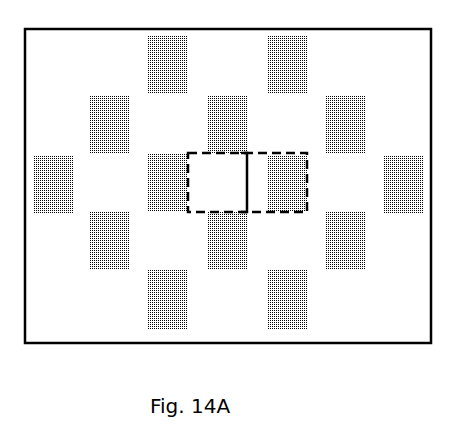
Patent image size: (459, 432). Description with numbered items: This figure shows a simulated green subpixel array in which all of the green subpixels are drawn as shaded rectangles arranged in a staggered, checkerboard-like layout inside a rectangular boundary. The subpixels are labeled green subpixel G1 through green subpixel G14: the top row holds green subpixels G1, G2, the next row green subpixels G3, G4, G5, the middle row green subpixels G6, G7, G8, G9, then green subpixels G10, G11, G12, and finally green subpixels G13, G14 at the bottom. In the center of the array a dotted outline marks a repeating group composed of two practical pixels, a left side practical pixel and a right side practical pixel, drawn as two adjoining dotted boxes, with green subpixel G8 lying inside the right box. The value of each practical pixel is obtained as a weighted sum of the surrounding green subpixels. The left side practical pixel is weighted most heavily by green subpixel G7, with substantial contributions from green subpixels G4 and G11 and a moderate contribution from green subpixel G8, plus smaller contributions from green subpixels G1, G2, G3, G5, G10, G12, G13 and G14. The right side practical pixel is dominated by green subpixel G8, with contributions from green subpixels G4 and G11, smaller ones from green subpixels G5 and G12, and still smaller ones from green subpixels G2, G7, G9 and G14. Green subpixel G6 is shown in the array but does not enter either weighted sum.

The green subpixel G1 is at (168, 64).
The green subpixel G2 is at (287, 64).
The green subpixel G3 is at (110, 124).
The green subpixel G4 is at (227, 124).
The green subpixel G5 is at (346, 124).
The green subpixel G6 is at (53, 184).
The green subpixel G7 is at (168, 183).
The green subpixel G8 is at (287, 183).
The green subpixel G9 is at (404, 184).
The green subpixel G10 is at (110, 241).
The green subpixel G11 is at (227, 241).
The green subpixel G12 is at (346, 241).
The green subpixel G13 is at (168, 300).
The green subpixel G14 is at (287, 300).